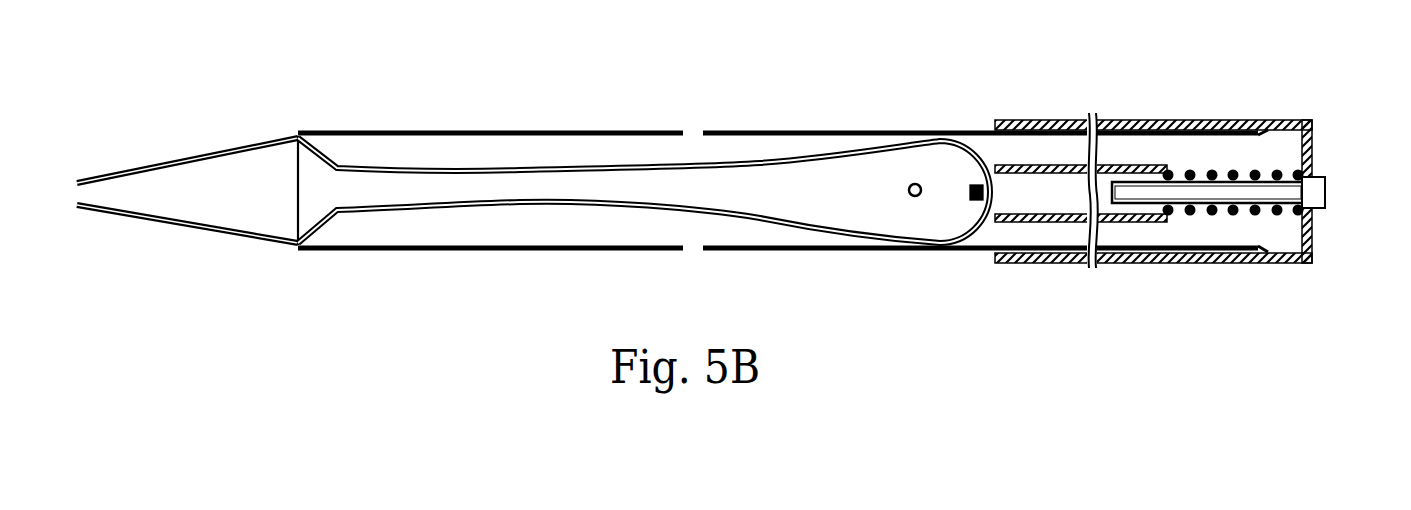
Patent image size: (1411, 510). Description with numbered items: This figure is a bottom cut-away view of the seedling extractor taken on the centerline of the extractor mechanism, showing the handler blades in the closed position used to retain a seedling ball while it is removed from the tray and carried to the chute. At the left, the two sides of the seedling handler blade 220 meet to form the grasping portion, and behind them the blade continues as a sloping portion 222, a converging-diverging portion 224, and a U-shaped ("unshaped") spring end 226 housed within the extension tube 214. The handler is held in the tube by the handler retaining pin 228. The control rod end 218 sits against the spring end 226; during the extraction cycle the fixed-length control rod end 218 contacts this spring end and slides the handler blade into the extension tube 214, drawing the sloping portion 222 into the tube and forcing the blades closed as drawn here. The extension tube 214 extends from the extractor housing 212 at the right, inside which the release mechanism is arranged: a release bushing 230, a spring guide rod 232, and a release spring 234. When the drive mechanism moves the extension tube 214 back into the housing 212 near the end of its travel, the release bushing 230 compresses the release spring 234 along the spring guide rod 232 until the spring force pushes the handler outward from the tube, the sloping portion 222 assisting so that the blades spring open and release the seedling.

The extractor housing 212 is at (1030, 120).
The extension tube 214 is at (612, 130).
The control rod end 218 is at (978, 200).
The handler blade 220 is at (137, 168).
The sloping portion 222 is at (345, 236).
The converging-diverging portion 224 is at (537, 207).
The unshaped spring end 226 is at (937, 143).
The handler retaining pin 228 is at (913, 197).
The release bushing 230 is at (1130, 222).
The spring guide rod 232 is at (1155, 192).
The release spring 234 is at (1282, 218).